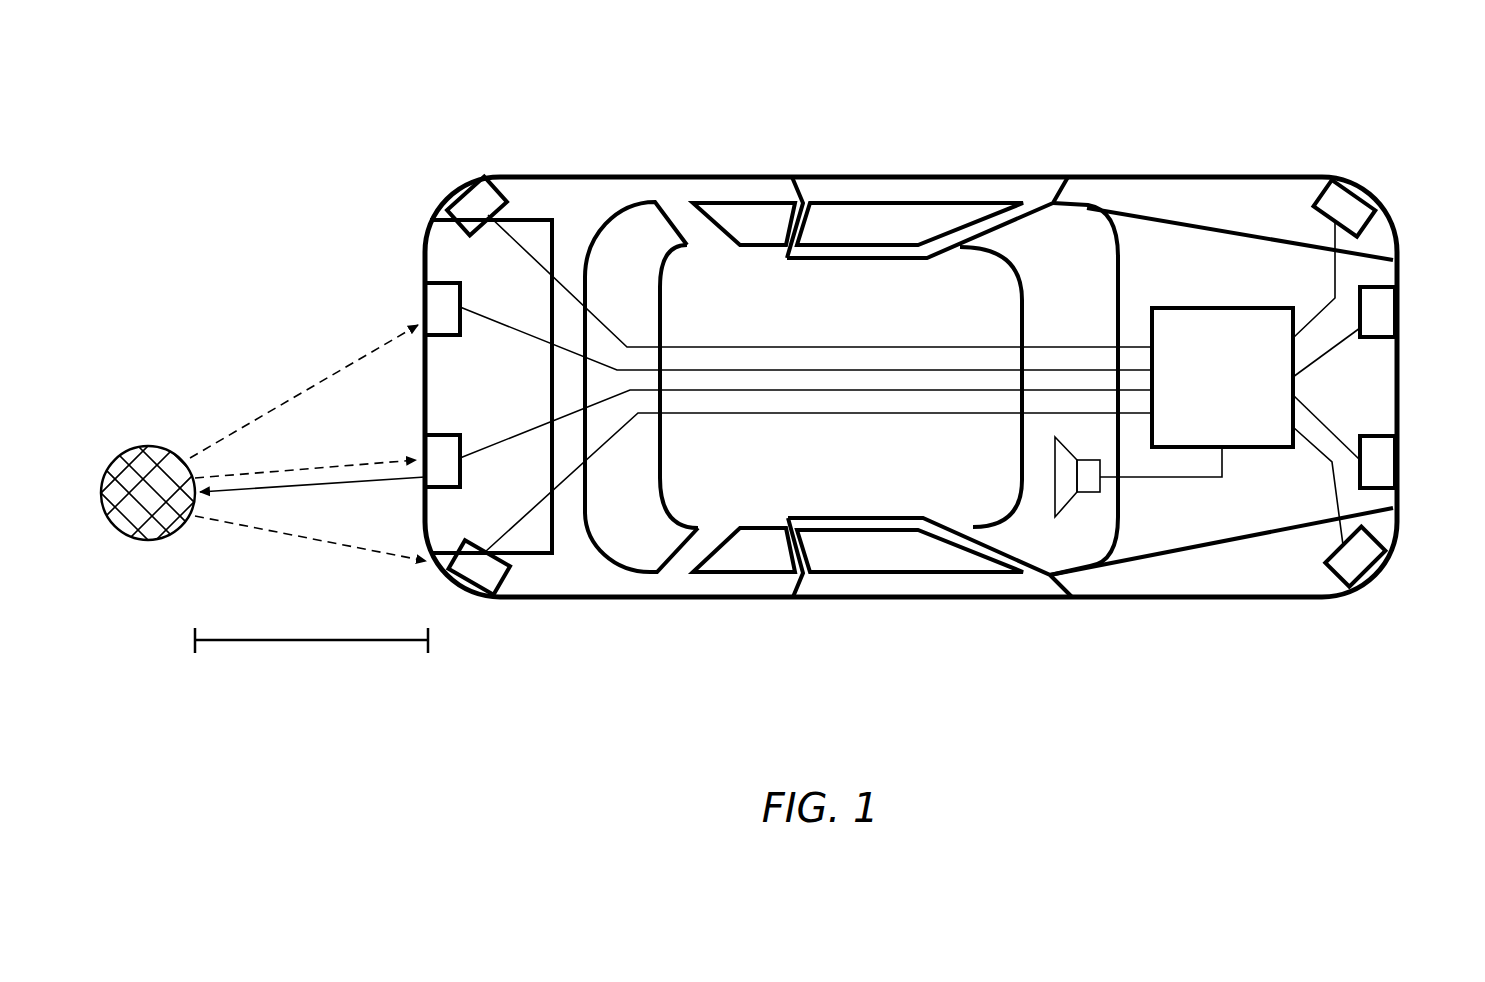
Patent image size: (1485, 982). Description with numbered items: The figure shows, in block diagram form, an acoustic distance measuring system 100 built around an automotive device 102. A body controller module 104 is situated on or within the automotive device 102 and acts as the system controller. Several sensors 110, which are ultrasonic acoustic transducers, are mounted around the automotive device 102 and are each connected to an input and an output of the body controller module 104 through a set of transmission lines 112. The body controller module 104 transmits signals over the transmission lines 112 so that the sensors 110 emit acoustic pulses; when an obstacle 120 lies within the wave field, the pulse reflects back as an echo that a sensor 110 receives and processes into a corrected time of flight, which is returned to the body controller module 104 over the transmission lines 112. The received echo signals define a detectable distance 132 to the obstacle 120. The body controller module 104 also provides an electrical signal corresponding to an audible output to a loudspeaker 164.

The acoustic distance measuring system 100 is at (1245, 90).
The automotive device 102 is at (580, 193).
The body controller module 104 is at (1222, 377).
The sensors 110 is at (480, 203).
The transmission lines 112 is at (762, 347).
The obstacle 120 is at (150, 460).
The detectable distance 132 is at (330, 642).
The loudspeaker 164 is at (1088, 484).